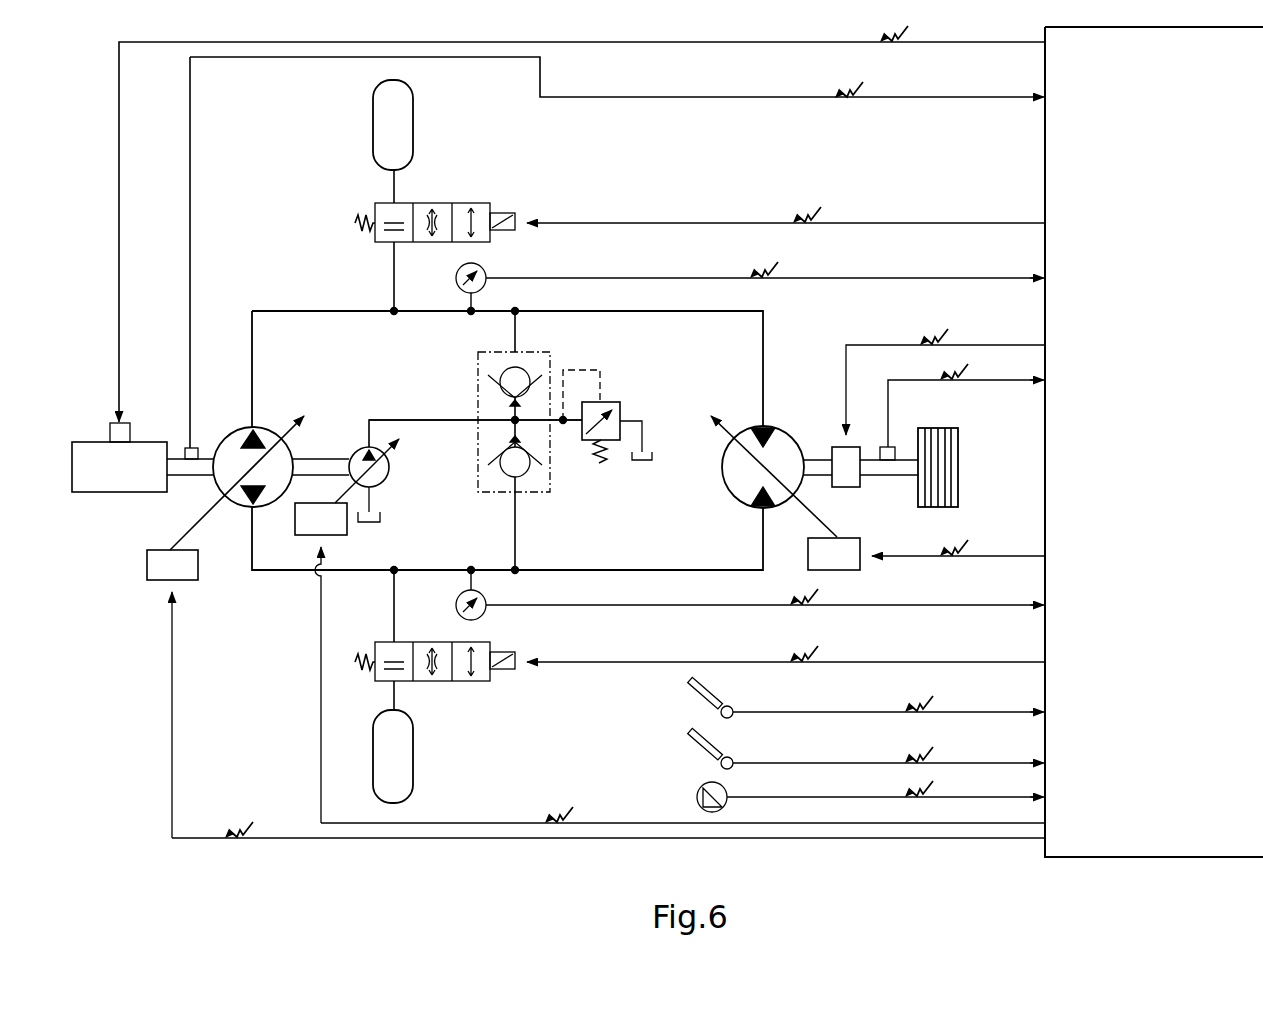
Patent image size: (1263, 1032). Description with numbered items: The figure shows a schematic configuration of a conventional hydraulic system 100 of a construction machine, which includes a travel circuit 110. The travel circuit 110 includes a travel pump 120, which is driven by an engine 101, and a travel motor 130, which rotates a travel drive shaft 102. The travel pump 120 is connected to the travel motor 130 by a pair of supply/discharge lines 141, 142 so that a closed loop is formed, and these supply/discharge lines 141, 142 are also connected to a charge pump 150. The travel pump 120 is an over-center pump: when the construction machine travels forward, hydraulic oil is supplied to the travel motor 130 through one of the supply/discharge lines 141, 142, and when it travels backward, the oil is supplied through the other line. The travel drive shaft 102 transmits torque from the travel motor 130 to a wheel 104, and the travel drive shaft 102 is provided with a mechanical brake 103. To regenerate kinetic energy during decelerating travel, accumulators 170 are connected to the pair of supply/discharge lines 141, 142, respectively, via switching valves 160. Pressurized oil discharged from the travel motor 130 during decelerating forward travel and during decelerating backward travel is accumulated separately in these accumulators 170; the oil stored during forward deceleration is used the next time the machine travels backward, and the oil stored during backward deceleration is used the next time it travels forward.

The hydraulic system 100 is at (110, 680).
The engine 101 is at (120, 492).
The travel drive shaft 102 is at (816, 458).
The mechanical brake 103 is at (850, 487).
The wheel 104 is at (958, 468).
The travel circuit 110 is at (312, 178).
The travel pump 120 is at (265, 427).
The travel motor 130 is at (722, 478).
The supply/discharge line 141 is at (315, 311).
The supply/discharge line 142 is at (282, 575).
The charge pump 150 is at (390, 475).
The switching valve 160 is at (480, 203).
The accumulator 170 is at (413, 102).